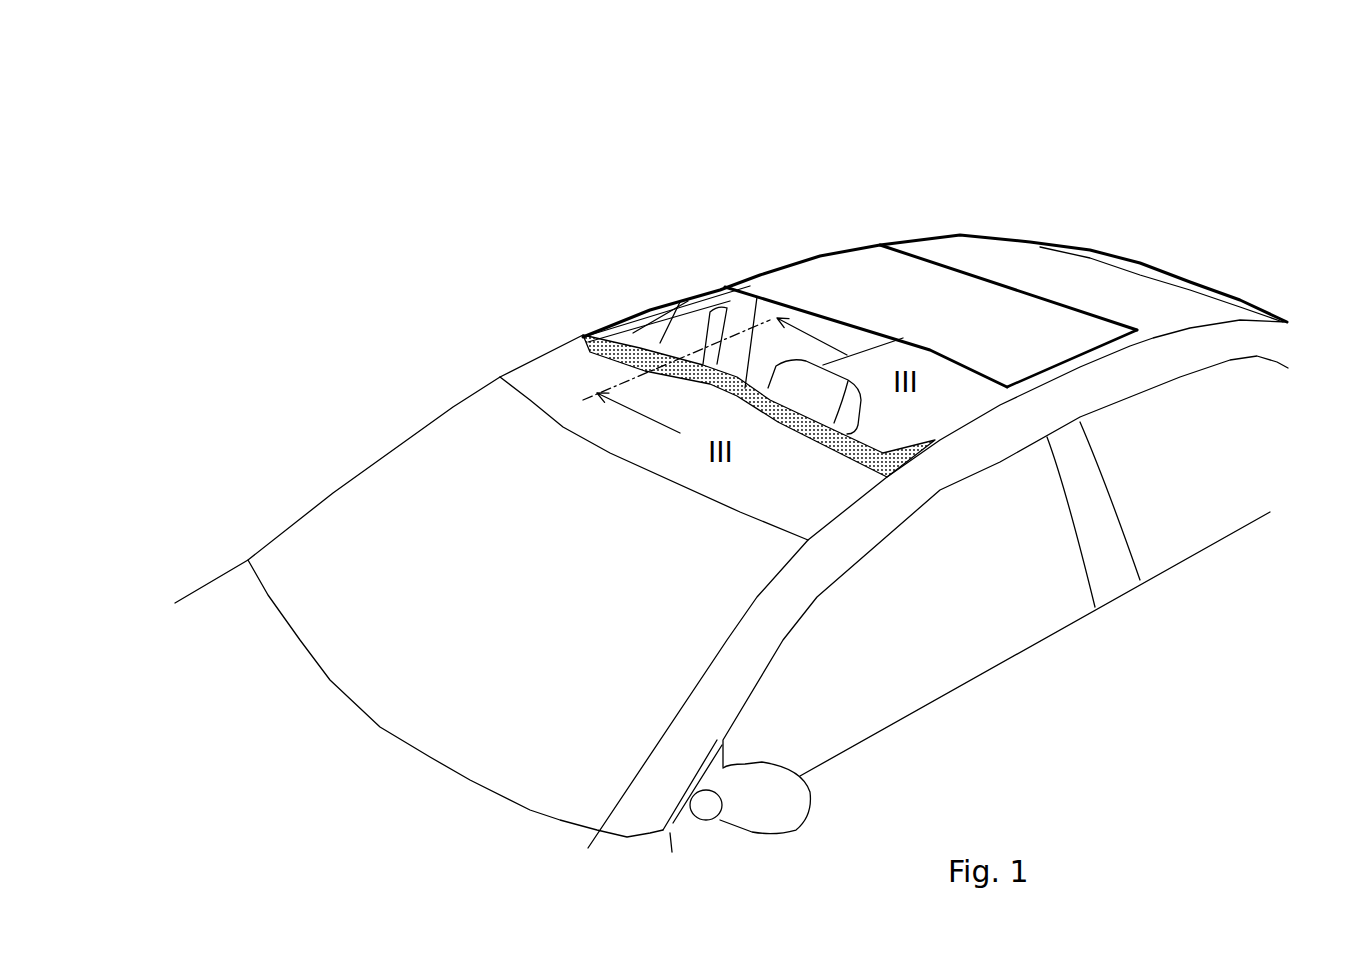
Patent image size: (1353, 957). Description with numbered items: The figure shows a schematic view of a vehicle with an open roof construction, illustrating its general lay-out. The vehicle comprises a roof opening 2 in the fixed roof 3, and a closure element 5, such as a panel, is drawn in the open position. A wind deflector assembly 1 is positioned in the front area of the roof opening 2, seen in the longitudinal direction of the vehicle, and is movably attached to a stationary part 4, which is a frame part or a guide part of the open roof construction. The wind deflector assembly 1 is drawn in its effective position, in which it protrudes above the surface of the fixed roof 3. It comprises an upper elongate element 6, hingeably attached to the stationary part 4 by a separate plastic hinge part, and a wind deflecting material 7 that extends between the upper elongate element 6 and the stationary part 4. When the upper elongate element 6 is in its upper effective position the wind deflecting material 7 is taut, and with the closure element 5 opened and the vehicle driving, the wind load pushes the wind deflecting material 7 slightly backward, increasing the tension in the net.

The wind deflector assembly 1 is at (575, 322).
The roof opening 2 is at (959, 399).
The fixed roof 3 is at (813, 490).
The stationary part 4 is at (723, 280).
The closure element 5 is at (843, 278).
The upper elongate element 6 is at (683, 290).
The wind deflecting material 7 is at (623, 313).